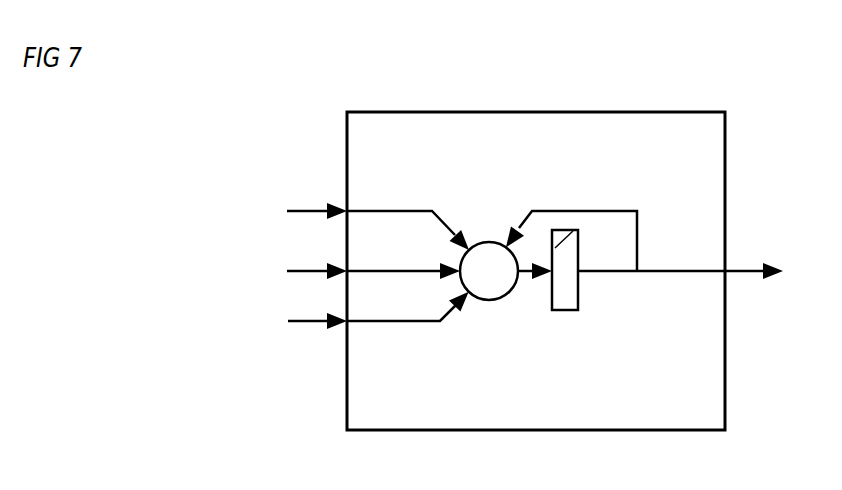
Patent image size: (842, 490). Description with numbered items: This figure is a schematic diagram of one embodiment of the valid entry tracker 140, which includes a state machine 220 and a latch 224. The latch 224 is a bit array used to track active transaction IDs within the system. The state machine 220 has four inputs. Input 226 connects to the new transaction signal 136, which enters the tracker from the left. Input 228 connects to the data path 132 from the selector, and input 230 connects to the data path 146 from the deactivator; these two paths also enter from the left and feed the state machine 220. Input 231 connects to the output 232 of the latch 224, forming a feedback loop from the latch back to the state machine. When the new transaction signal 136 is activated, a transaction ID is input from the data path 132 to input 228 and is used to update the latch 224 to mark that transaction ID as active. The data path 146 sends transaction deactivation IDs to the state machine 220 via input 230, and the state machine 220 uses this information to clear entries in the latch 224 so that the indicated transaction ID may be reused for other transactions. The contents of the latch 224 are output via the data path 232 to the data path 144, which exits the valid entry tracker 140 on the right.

The valid entry tracker 140 is at (628, 145).
The new transaction signal 136 is at (300, 211).
The data path 132 is at (293, 272).
The data path 146 is at (312, 325).
The input 226 is at (373, 210).
The input 228 is at (373, 270).
The input 230 is at (387, 322).
The state machine 220 is at (490, 241).
The latch 224 is at (580, 292).
The input 231 is at (620, 210).
The output 232 is at (668, 265).
The data path 144 is at (743, 265).